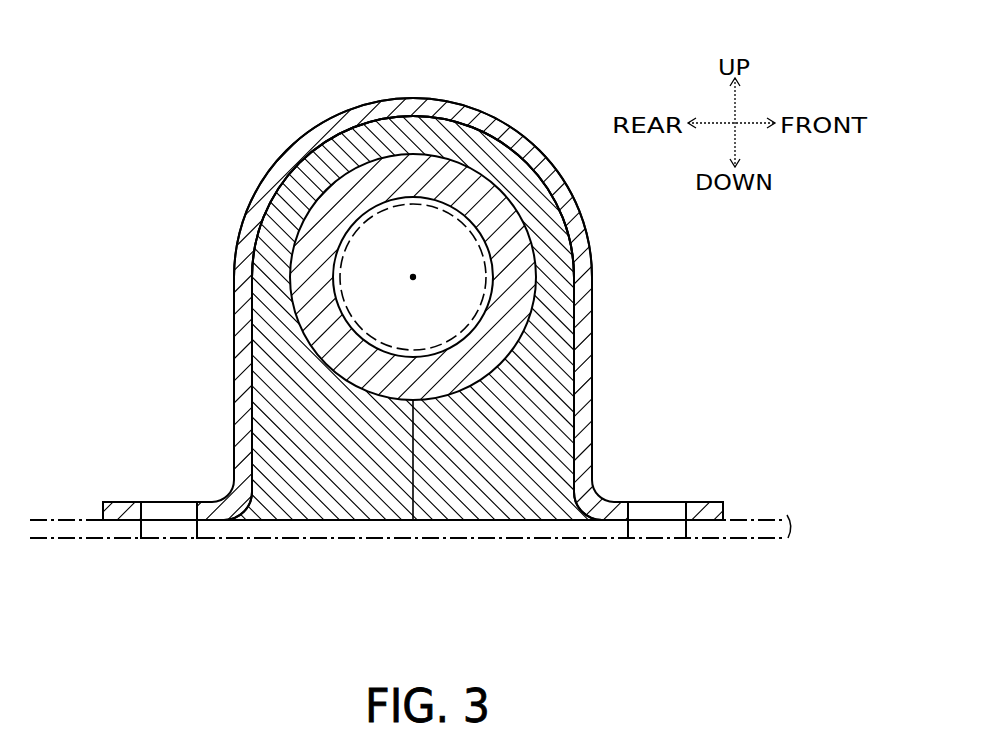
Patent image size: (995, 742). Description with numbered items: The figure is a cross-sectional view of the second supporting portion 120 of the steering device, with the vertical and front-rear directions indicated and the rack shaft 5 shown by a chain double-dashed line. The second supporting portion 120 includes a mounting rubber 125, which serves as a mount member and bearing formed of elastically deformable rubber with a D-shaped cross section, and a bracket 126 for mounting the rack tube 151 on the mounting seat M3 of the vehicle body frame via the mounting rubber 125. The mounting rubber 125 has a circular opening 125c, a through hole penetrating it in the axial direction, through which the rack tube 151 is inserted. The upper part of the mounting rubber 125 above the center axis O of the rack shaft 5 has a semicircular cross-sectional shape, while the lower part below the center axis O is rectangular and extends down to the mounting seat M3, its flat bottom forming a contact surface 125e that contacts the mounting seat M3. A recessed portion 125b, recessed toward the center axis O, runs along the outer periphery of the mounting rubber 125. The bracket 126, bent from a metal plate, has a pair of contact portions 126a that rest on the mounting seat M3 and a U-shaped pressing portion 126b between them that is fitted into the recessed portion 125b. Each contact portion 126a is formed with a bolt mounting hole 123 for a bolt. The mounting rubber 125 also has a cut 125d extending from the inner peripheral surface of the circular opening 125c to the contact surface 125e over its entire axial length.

The second supporting portion 120 is at (551, 65).
The bracket 126 is at (602, 318).
The contact portions 126a is at (112, 502).
The pressing portion 126b is at (240, 225).
The bolt mounting hole 123 is at (197, 502).
The mounting rubber 125 is at (550, 413).
The recessed portion 125b is at (413, 116).
The circular opening 125c is at (372, 161).
The cut 125d is at (420, 521).
The contact surface 125e is at (508, 521).
The rack tube 151 is at (510, 232).
The rack shaft 5 is at (493, 267).
The center axis O is at (412, 275).
The mounting seat M3 is at (749, 533).